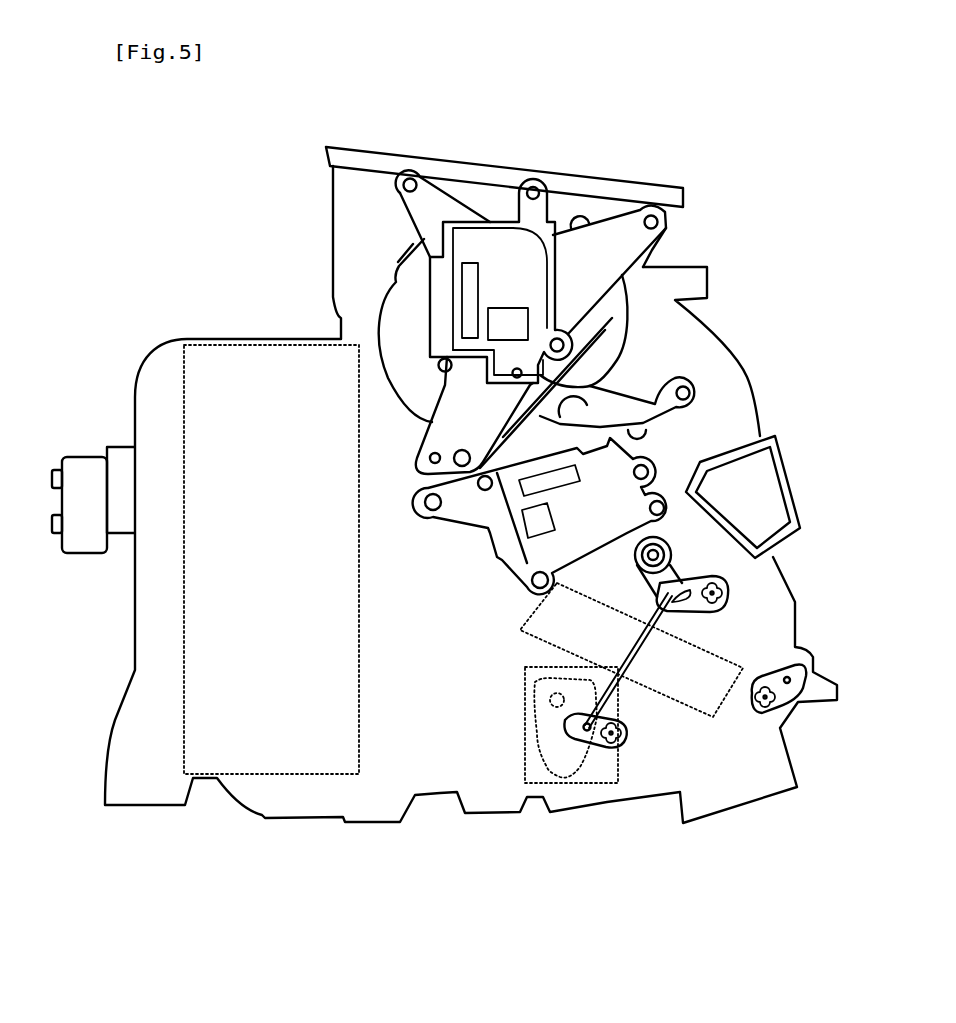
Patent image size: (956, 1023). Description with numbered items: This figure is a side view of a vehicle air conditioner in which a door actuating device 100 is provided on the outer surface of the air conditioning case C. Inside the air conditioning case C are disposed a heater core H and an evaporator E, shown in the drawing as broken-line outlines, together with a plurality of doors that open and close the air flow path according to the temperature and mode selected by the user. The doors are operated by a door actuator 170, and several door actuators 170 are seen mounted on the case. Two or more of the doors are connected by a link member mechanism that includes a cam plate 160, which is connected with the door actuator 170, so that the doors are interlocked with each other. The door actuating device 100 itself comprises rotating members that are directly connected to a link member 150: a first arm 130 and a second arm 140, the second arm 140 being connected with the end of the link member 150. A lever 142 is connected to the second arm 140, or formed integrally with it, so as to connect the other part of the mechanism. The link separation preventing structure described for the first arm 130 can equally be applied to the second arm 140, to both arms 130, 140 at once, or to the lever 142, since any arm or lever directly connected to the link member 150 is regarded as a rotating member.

The door actuating device 100 is at (627, 670).
The first arm 130 is at (580, 735).
The second arm 140 is at (730, 602).
The lever 142 is at (675, 568).
The link member 150 is at (607, 650).
The cam plate 160 is at (413, 387).
The door actuator 170 is at (483, 240).
The air conditioning case C is at (333, 236).
The evaporator E is at (243, 357).
The heater core H is at (717, 723).